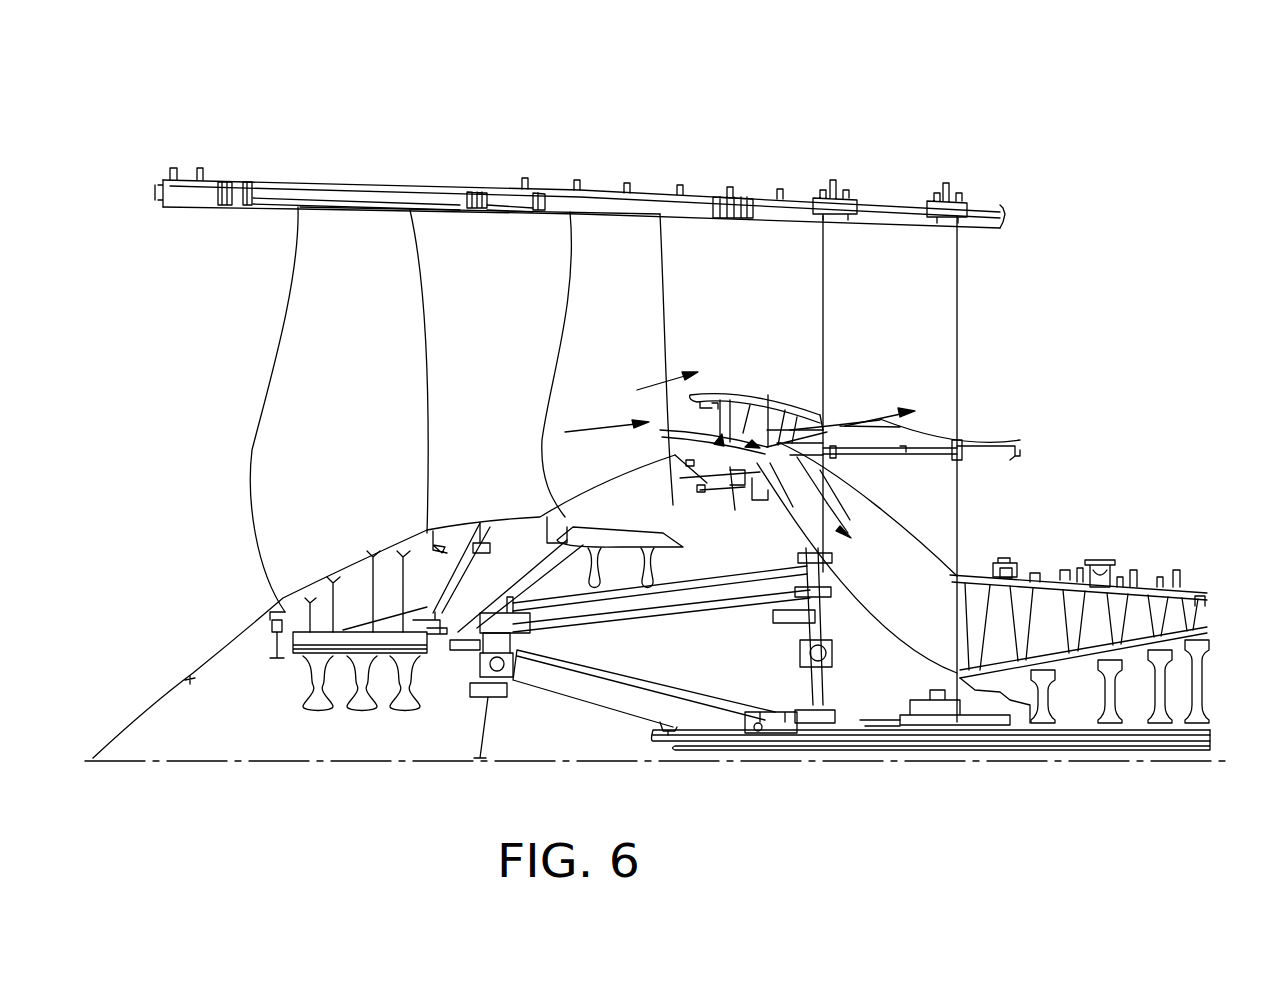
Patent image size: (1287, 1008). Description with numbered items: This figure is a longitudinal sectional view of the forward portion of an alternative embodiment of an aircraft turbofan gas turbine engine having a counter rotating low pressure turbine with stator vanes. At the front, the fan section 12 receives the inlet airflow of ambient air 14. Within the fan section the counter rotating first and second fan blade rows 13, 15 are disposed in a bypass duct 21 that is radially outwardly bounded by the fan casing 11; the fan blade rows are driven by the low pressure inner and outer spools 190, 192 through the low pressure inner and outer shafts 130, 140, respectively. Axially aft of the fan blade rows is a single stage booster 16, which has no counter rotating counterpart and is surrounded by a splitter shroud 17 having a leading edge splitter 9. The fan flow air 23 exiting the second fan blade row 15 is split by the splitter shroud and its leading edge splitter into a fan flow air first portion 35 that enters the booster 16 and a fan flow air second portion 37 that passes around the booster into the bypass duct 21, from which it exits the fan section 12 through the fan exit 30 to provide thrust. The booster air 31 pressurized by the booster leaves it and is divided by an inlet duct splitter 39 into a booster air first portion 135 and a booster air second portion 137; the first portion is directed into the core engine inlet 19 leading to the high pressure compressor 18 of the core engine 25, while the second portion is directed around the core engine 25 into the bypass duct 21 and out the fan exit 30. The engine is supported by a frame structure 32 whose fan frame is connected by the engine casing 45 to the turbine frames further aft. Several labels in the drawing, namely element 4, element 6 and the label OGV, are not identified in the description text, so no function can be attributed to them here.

The first stage fan blade 4 is at (273, 368).
The second stage fan blade 6 is at (562, 313).
The leading edge splitter 9 is at (690, 397).
The fan casing 11 is at (592, 192).
The fan section 12 is at (443, 147).
The first fan blade row 13 is at (362, 401).
The inlet airflow of ambient air 14 is at (210, 525).
The second fan blade row 15 is at (597, 401).
The booster 16 is at (762, 380).
The splitter shroud 17 is at (710, 394).
The high pressure compressor 18 is at (1130, 545).
The core engine inlet 19 is at (767, 410).
The bypass duct 21 is at (502, 255).
The fan flow air 23 is at (570, 432).
The core engine 25 is at (1190, 578).
The fan exit 30 is at (1029, 326).
The booster air 31 is at (735, 505).
The frame structure 32 is at (898, 204).
The fan flow air first portion 35 is at (680, 470).
The fan flow air second portion 37 is at (663, 380).
The inlet duct splitter 39 is at (803, 452).
The engine casing 45 is at (1030, 574).
The low pressure inner shaft 130 is at (1010, 737).
The booster air first portion 135 is at (847, 500).
The booster air second portion 137 is at (973, 439).
The low pressure outer shaft 140 is at (1070, 733).
The low pressure inner spool 190 is at (870, 740).
The low pressure outer spool 192 is at (613, 674).
The outlet guide vane OGV is at (807, 428).